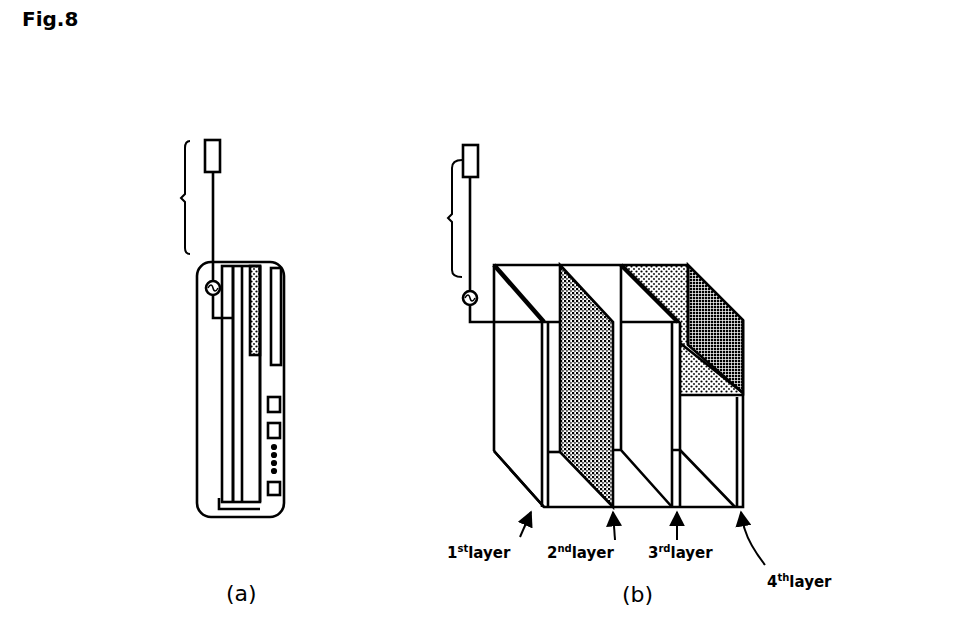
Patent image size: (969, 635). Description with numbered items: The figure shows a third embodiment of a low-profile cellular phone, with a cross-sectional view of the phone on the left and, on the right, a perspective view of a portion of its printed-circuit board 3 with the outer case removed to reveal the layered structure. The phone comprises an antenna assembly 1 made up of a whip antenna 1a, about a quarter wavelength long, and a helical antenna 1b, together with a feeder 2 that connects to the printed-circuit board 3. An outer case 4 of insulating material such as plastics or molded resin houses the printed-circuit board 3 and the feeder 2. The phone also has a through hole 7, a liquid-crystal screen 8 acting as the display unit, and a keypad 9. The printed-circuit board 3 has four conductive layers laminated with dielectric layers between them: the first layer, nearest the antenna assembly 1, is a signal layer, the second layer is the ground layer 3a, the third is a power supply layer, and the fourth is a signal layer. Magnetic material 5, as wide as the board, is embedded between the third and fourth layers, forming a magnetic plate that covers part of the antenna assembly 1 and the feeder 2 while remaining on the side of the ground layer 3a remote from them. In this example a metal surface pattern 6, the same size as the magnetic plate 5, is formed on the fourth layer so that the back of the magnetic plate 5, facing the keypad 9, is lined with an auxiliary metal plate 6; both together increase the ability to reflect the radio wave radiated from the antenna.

The antenna assembly 1 is at (176, 198).
The whip antenna 1a is at (215, 197).
The helical antenna 1b is at (212, 140).
The feeder 2 is at (206, 285).
The printed-circuit board 3 is at (238, 510).
The ground layer 3a is at (230, 473).
The outer case 4 is at (197, 442).
The magnetic material 5 is at (255, 264).
The metal surface pattern 6 is at (270, 264).
The through hole 7 is at (230, 319).
The liquid-crystal screen 8 is at (279, 297).
The keypad 9 is at (285, 397).